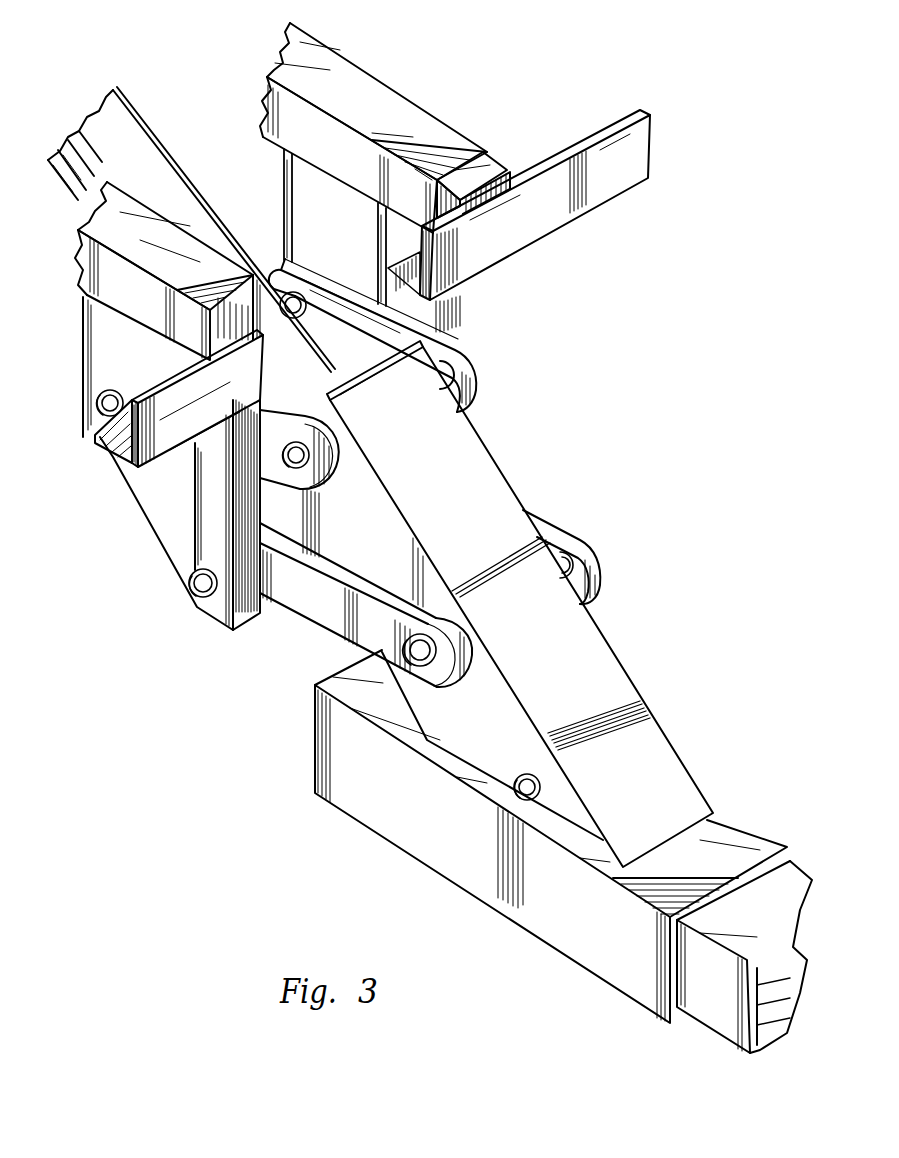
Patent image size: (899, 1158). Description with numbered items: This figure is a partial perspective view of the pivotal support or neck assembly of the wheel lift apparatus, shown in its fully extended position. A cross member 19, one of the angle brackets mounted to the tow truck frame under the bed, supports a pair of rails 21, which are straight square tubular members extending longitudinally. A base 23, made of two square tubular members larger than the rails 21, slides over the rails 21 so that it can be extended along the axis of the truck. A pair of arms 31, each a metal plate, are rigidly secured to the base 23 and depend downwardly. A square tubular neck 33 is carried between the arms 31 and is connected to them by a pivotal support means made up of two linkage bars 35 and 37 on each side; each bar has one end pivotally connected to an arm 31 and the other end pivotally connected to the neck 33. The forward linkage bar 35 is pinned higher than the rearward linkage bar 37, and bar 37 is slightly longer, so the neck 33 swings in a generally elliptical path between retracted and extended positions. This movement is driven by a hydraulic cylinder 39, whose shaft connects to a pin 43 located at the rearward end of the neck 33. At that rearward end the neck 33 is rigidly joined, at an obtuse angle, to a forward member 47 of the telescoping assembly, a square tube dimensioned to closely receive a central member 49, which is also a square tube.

The cross member 19 is at (648, 152).
The rails 21 is at (492, 152).
The base 23 is at (396, 80).
The arms 31 is at (167, 562).
The neck 33 is at (495, 430).
The forward linkage bar 35 is at (478, 345).
The rearward linkage bar 37 is at (590, 538).
The hydraulic cylinder 39 is at (191, 194).
The pin 43 is at (522, 800).
The forward member 47 is at (738, 795).
The central member 49 is at (700, 1022).